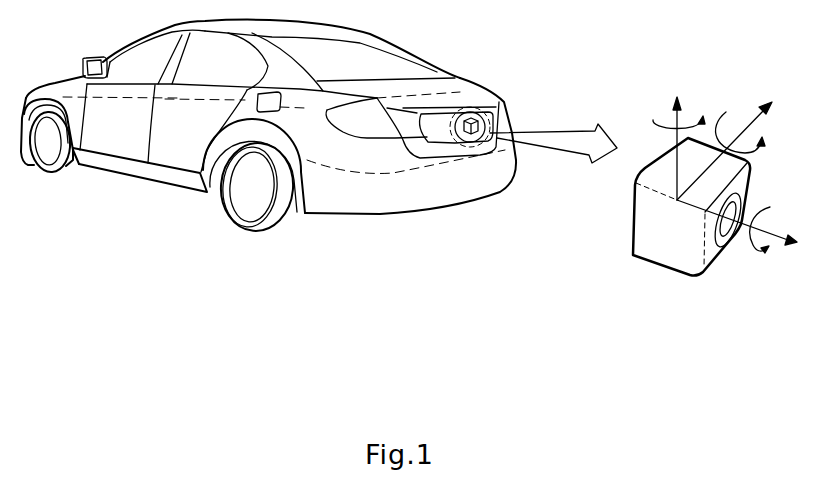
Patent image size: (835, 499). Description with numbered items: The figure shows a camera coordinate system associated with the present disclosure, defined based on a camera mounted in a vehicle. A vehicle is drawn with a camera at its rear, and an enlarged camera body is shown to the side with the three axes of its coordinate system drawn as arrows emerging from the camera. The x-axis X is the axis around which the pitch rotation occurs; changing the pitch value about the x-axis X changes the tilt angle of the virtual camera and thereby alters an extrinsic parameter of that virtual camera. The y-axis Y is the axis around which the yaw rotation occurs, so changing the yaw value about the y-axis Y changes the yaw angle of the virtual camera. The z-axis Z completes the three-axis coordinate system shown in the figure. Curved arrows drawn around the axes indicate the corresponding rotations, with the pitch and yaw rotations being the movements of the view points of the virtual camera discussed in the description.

The X axis of camera coordinate system X is at (734, 144).
The Y axis of camera coordinate system Y is at (676, 135).
The Z axis of camera coordinate system Z is at (746, 228).